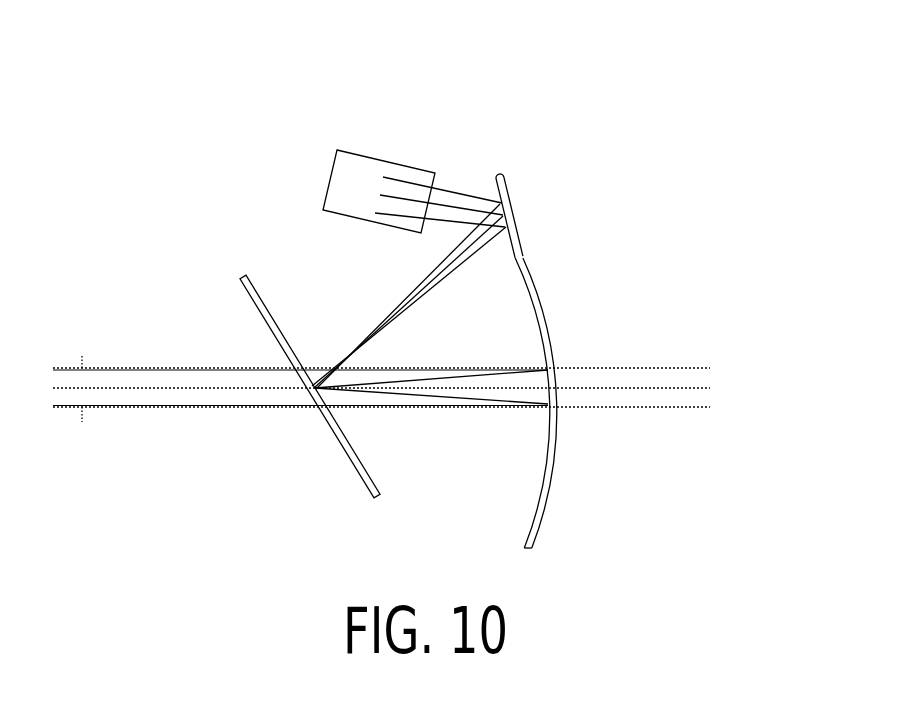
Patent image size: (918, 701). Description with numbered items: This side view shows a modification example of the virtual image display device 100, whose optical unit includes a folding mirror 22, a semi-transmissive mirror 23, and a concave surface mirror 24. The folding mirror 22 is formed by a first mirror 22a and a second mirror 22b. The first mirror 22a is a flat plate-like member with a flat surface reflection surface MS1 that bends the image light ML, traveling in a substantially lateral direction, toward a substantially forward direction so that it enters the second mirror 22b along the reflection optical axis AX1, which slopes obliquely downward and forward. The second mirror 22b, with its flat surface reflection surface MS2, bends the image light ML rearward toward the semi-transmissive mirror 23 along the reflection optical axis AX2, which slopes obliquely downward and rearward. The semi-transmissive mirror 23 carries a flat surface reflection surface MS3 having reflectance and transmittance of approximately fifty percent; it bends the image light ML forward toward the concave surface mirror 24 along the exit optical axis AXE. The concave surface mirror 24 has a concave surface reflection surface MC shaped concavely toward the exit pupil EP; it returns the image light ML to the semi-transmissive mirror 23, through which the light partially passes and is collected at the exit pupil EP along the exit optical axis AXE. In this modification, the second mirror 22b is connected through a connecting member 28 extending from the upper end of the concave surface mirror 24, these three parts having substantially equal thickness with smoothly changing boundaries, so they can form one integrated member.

The virtual image display device 100 is at (543, 123).
The folding mirror 22 is at (470, 128).
The first mirror 22a is at (385, 160).
The second mirror 22b is at (504, 187).
The flat surface reflection surface MS1 is at (357, 180).
The flat surface reflection surface MS2 is at (508, 220).
The flat surface reflection surface MS3 is at (281, 333).
The reflection optical axis AX1 is at (459, 207).
The reflection optical axis AX2 is at (462, 258).
The image light ML is at (405, 305).
The exit pupil EP is at (82, 356).
The exit optical axis AXE is at (226, 390).
The semi-transmissive mirror 23 is at (372, 500).
The concave surface mirror 24 is at (553, 345).
The connecting member 28 is at (574, 399).
The concave surface reflection surface MC is at (548, 455).